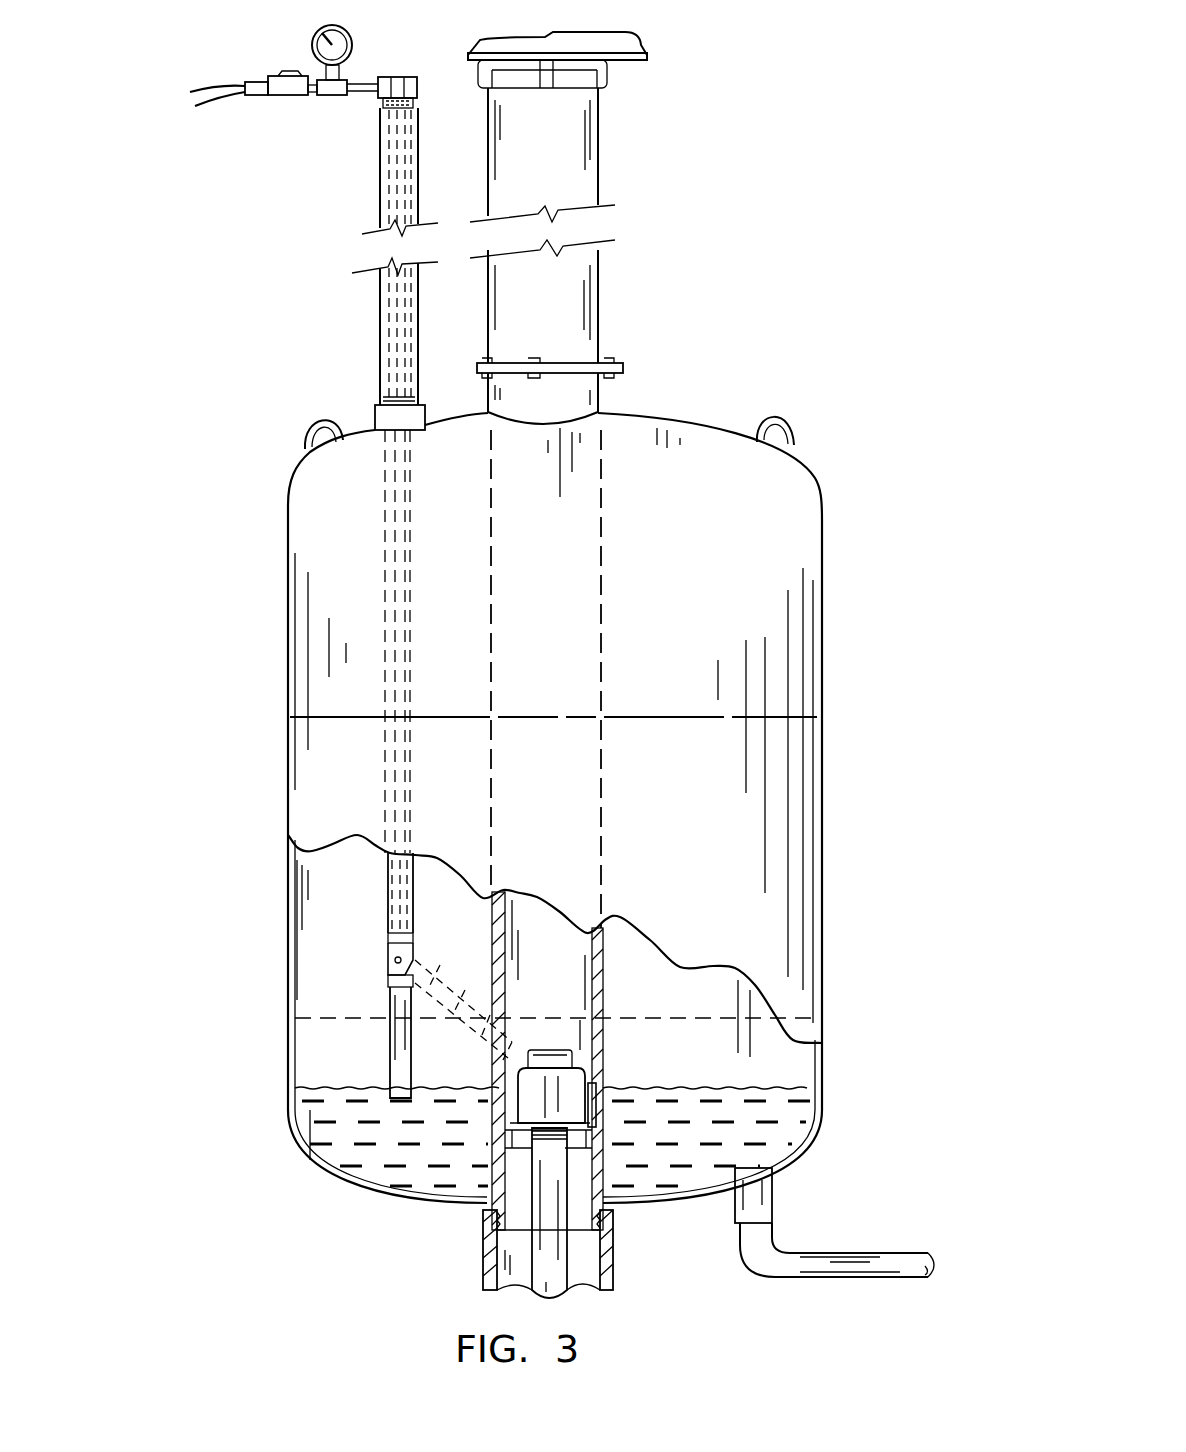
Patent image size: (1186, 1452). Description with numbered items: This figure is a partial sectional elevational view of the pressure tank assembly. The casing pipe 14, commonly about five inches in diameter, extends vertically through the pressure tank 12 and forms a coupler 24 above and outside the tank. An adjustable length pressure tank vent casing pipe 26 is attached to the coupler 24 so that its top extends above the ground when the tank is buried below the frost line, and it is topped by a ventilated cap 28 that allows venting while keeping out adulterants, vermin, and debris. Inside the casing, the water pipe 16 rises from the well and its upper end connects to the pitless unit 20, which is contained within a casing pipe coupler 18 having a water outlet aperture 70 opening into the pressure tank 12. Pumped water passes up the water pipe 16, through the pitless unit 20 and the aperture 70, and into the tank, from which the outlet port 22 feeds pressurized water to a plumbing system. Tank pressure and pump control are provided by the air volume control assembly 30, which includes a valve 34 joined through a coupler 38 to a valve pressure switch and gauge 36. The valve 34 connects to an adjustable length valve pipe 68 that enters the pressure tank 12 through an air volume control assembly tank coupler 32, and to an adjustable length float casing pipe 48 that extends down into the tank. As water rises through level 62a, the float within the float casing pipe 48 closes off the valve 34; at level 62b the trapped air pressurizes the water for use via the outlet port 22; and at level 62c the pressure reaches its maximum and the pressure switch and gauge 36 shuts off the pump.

The pressure tank 12 is at (300, 755).
The casing pipe 14 is at (483, 1268).
The water pipe 16 is at (560, 1285).
The casing pipe coupler 18 is at (495, 1222).
The pitless unit 20 is at (585, 1068).
The outlet port 22 is at (765, 1250).
The coupler 24 is at (590, 405).
The pressure tank vent casing pipe 26 is at (575, 330).
The ventilated cap 28 is at (632, 40).
The air volume control assembly 30 is at (338, 921).
The air volume control assembly tank coupler 32 is at (380, 410).
The valve 34 is at (400, 78).
The valve pressure switch and gauge 36 is at (300, 78).
The coupler 38 is at (375, 92).
The float casing pipe 48 is at (385, 878).
The water level 62a is at (760, 1088).
The water level 62b is at (690, 1018).
The water level 62c is at (720, 717).
The valve pipe 68 is at (380, 292).
The water outlet aperture 70 is at (603, 1108).